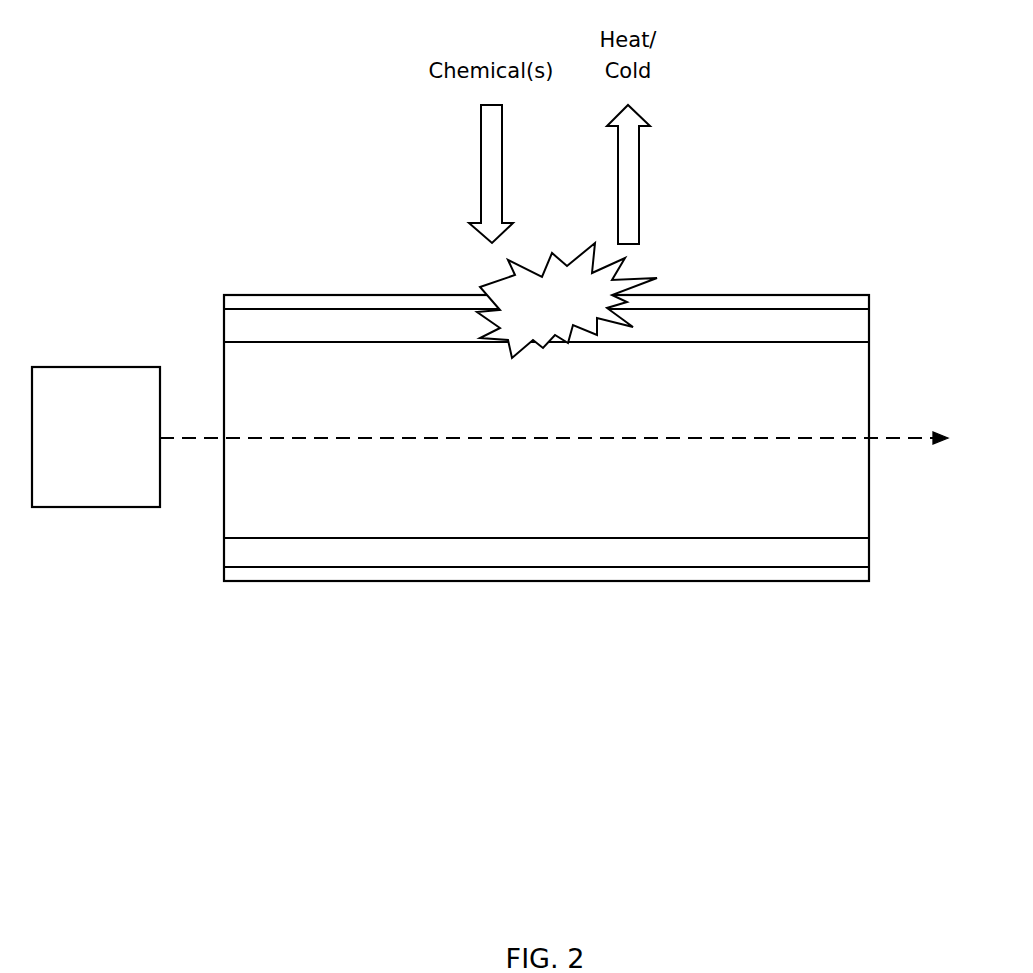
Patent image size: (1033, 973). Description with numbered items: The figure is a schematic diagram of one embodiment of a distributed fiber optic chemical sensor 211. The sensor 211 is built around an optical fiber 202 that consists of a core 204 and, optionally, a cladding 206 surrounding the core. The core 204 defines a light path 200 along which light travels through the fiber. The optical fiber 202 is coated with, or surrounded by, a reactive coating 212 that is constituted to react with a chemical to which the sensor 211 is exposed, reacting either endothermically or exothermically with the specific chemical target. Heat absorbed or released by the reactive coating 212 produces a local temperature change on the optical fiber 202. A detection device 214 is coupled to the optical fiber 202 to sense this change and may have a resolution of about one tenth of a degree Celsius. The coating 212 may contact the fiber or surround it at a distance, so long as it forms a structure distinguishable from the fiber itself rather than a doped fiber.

The light path 200 is at (190, 412).
The optical fiber 202 is at (373, 270).
The core 204 is at (270, 376).
The cladding 206 is at (322, 316).
The distributed fiber optic chemical sensor 211 is at (422, 228).
The reactive coating 212 is at (757, 273).
The detection device 214 is at (96, 437).